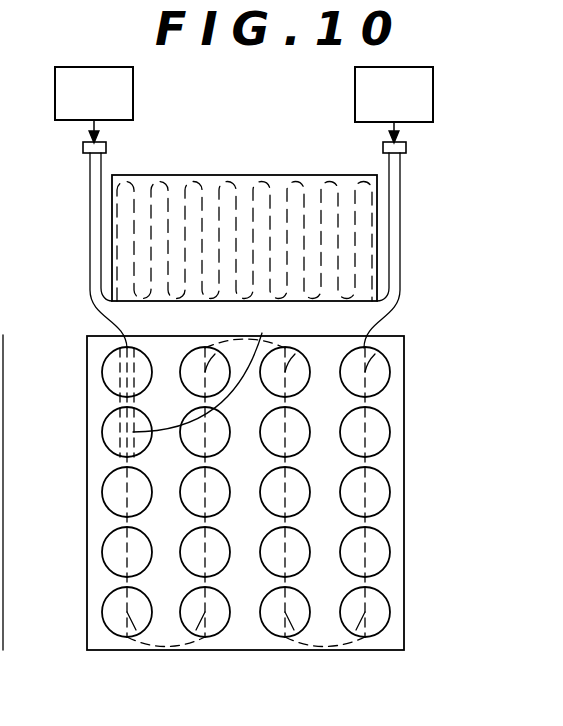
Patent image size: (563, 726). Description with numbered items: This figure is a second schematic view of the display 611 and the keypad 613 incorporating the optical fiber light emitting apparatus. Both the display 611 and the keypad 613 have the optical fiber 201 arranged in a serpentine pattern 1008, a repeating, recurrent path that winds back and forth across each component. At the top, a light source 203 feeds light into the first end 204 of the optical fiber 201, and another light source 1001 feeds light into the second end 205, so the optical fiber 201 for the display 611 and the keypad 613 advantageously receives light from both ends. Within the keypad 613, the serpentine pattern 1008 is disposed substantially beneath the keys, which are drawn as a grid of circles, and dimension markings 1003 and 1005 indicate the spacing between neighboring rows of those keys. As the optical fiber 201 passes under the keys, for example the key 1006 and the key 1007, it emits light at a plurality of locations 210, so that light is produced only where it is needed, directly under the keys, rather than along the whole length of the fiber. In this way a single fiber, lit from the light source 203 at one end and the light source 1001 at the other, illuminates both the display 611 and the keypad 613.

The light source 203 is at (133, 100).
The light source 1001 is at (433, 102).
The first end 204 is at (101, 168).
The optical fiber 201 is at (90, 220).
The second end 205 is at (400, 175).
The display 611 is at (268, 175).
The keypad 613 is at (392, 336).
The plurality of locations 210 is at (122, 348).
The lens spacing 1003 is at (59, 398).
The lens spacing 1005 is at (59, 458).
The key 1006 is at (133, 368).
The key 1007 is at (219, 372).
The serpentine pattern 1008 is at (395, 668).